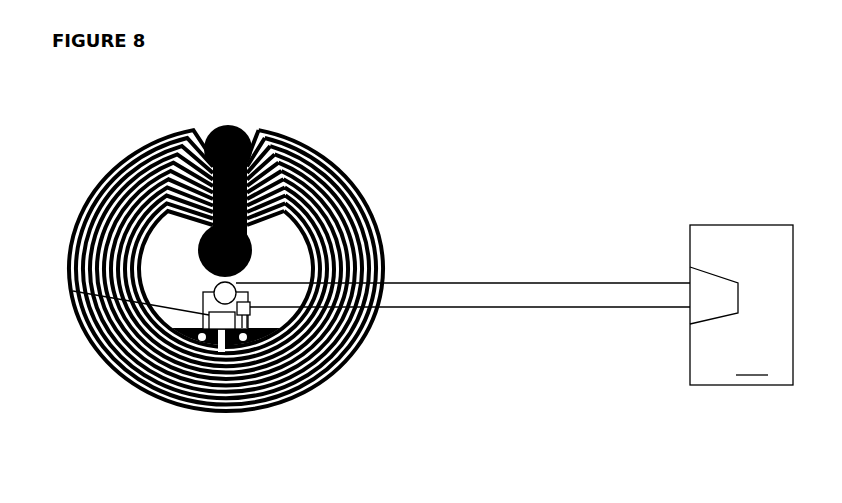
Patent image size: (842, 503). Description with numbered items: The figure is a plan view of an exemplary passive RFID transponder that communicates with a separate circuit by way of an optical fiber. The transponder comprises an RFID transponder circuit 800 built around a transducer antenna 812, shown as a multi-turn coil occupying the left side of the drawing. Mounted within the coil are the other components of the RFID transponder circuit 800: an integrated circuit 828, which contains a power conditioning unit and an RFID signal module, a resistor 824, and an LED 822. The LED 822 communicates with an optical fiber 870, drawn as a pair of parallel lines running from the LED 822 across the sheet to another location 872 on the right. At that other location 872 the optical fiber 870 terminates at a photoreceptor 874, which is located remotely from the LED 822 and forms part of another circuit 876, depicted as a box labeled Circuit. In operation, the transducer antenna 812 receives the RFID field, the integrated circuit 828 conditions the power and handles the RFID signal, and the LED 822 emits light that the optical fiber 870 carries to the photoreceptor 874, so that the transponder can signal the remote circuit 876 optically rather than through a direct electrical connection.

The RFID transponder circuit 800 is at (102, 368).
The transducer antenna 812 is at (178, 405).
The LED 822 is at (213, 283).
The resistor 824 is at (325, 380).
The integrated circuit 828 is at (73, 291).
The optical fiber 870 is at (500, 308).
The another location 872 is at (715, 222).
The photoreceptor 874 is at (695, 326).
The another circuit 876 is at (752, 366).